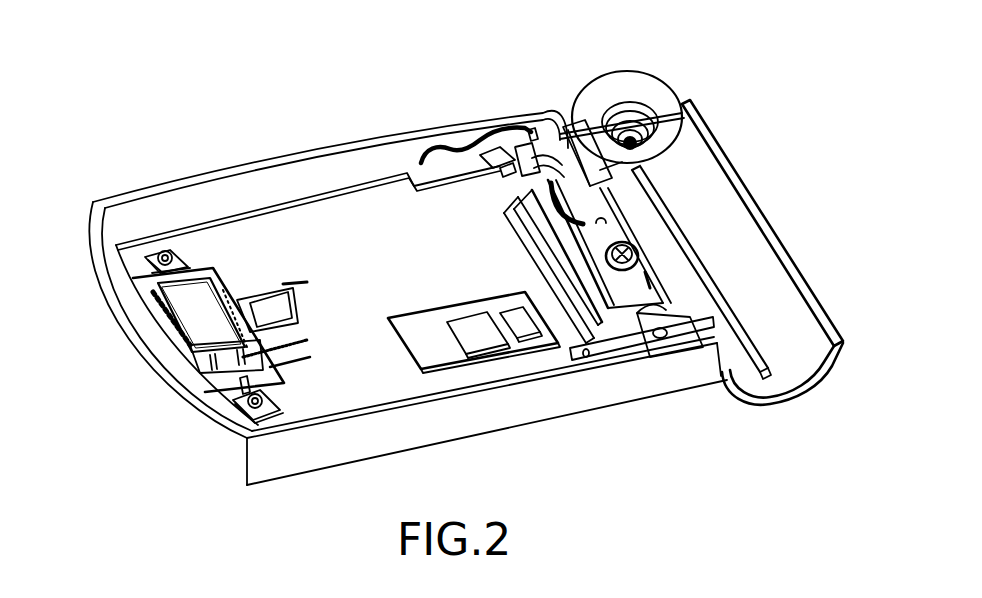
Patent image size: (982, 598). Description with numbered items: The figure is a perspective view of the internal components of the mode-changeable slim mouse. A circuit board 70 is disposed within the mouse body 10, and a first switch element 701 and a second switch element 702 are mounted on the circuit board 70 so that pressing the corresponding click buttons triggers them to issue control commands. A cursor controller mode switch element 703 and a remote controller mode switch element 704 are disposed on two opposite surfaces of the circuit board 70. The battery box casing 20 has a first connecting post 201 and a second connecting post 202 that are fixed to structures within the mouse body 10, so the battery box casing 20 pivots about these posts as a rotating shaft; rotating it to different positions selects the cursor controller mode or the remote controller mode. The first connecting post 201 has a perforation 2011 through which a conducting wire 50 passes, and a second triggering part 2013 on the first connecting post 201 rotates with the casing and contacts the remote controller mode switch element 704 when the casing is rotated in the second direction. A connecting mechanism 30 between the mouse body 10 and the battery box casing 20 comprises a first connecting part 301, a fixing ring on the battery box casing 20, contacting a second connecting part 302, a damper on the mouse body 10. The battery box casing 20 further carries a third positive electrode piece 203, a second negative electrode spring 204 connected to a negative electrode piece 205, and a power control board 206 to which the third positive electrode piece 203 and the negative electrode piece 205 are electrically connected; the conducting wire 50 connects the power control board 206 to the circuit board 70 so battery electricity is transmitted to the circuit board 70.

The mouse body 10 is at (203, 203).
The battery box casing 20 is at (791, 300).
The connecting mechanism 30 is at (712, 362).
The conducting wire 50 is at (545, 200).
The circuit board 70 is at (320, 228).
The first connecting post 201 is at (557, 135).
The second connecting post 202 is at (652, 315).
The third positive electrode piece 203 is at (712, 325).
The second negative electrode spring 204 is at (650, 108).
The negative electrode piece 205 is at (622, 162).
The power control board 206 is at (652, 272).
The first connecting part 301 is at (647, 340).
The second connecting part 302 is at (573, 355).
The first switch element 701 is at (164, 251).
The second switch element 702 is at (240, 398).
The cursor controller mode switch element 703 is at (470, 140).
The remote controller mode switch element 704 is at (492, 140).
The perforation 2011 is at (560, 150).
The second triggering part 2013 is at (533, 127).